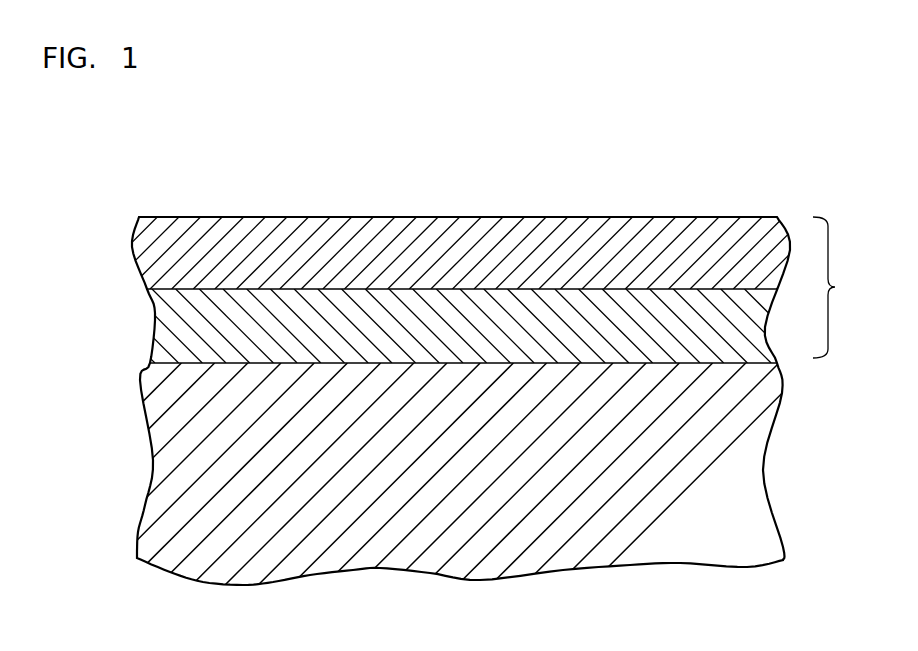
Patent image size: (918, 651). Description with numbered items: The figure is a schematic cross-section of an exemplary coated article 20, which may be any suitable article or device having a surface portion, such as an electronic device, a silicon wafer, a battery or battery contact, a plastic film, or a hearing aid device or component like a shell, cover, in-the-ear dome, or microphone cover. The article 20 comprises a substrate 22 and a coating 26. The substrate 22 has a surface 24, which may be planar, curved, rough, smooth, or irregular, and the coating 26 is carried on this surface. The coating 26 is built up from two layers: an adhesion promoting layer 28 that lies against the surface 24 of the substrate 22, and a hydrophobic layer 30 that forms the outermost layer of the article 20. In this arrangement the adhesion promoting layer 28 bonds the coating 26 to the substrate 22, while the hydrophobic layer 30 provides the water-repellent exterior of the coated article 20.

The article 20 is at (620, 188).
The substrate 22 is at (633, 530).
The surface 24 is at (235, 352).
The coating 26 is at (840, 287).
The adhesion promoting layer 28 is at (185, 305).
The hydrophobic layer 30 is at (203, 232).